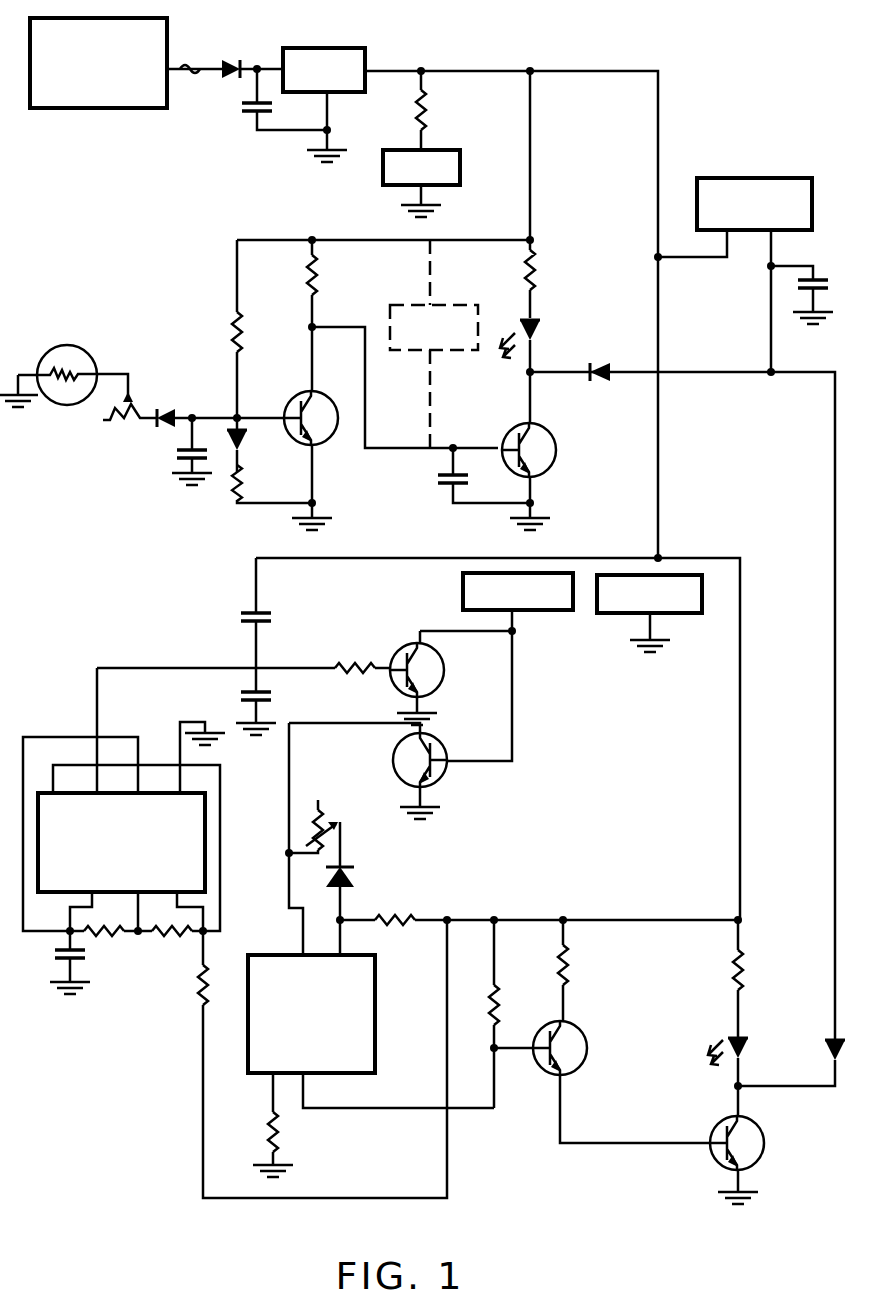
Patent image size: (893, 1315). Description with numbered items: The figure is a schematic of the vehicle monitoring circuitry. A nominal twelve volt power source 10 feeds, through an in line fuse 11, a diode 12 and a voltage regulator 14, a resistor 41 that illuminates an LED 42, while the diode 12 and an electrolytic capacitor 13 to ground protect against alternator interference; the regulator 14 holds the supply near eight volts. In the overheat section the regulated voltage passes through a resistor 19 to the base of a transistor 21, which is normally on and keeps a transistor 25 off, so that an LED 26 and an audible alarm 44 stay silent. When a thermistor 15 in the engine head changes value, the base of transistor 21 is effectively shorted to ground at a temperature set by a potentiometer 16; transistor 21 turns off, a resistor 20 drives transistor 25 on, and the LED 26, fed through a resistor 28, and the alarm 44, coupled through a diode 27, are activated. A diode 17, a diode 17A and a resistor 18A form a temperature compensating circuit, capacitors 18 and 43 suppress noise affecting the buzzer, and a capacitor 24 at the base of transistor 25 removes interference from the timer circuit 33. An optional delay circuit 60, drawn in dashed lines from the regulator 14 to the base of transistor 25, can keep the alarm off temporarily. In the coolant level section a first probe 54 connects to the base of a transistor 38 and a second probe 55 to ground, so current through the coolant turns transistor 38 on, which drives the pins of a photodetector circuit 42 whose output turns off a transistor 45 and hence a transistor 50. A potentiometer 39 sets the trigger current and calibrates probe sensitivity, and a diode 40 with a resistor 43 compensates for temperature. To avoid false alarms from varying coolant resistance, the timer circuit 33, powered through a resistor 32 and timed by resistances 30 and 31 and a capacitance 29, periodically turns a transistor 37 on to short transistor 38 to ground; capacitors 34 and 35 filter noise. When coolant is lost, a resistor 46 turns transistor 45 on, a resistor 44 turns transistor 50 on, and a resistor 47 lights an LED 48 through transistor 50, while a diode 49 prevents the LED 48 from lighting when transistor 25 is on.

The power source 10 is at (168, 37).
The in line fuse 11 is at (204, 64).
The diode 12 is at (229, 60).
The electrolytic capacitor 13 is at (243, 112).
The voltage regulator 14 is at (326, 48).
The thermistor 15 is at (88, 362).
The potentiometer 16 is at (116, 420).
The diode 17 is at (162, 406).
The diode 17A is at (245, 416).
The capacitor 18 is at (176, 466).
The resistor 18A is at (243, 484).
The resistor 19 is at (243, 330).
The resistor 20 is at (318, 283).
The transistor 21 is at (320, 445).
The capacitor 24 is at (440, 476).
The transistor 25 is at (560, 455).
The light emitting diode 26 is at (538, 325).
The diode 27 is at (603, 365).
The resistor 28 is at (538, 270).
The capacitor 29 is at (65, 958).
The resistor 30 is at (105, 935).
The resistor 31 is at (169, 936).
The resistor 32 is at (200, 1003).
The timer circuit 33 is at (150, 793).
The capacitor 34 is at (272, 698).
The capacitor 35 is at (275, 614).
The transistor 37 is at (446, 670).
The transistor 38 is at (450, 764).
The potentiometer 39 is at (318, 788).
The diode 40 is at (360, 876).
The resistor 41 is at (411, 118).
The light emitting diode / photodetector circuit 42 is at (452, 150).
The capacitor / resistor 43 is at (822, 275).
The audible alarm / resistor 44 is at (744, 178).
The transistor 45 is at (585, 1035).
The resistor 46 is at (510, 1005).
The resistor 47 is at (730, 968).
The light emitting diode 48 is at (746, 1040).
The diode 49 is at (825, 1040).
The transistor 50 is at (765, 1143).
The first probe 54 is at (462, 590).
The second probe 55 is at (618, 615).
The delay circuit 60 is at (462, 300).